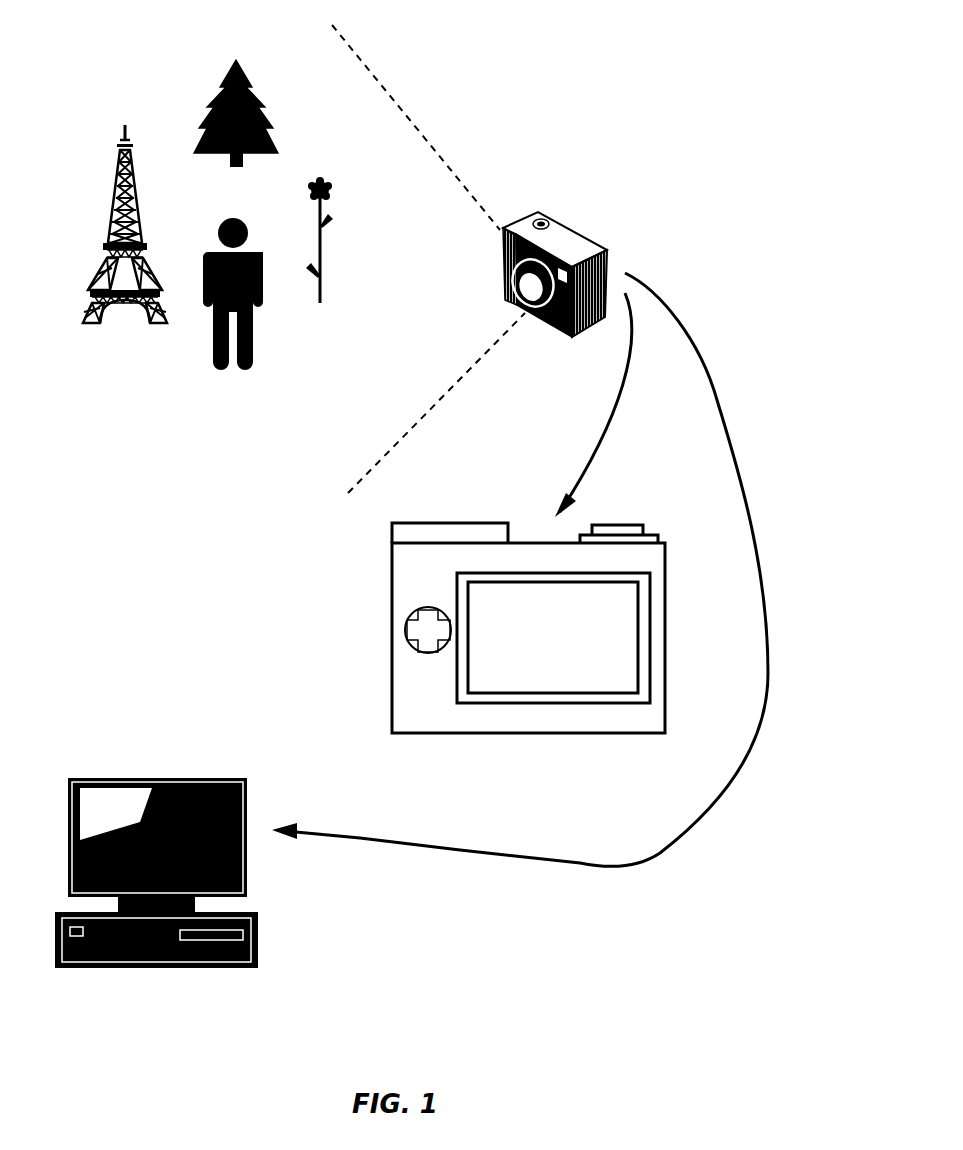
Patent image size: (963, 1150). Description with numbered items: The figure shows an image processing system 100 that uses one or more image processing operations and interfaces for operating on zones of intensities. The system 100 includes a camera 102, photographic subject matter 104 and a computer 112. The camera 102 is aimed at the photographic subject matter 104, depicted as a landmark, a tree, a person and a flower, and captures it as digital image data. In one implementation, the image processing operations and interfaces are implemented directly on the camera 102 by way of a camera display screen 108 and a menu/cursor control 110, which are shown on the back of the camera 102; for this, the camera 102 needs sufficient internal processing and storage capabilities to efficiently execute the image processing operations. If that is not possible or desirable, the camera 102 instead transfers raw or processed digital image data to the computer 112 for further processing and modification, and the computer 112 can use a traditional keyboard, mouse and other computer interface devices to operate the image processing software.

The image processing system 100 is at (550, 45).
The camera 102 is at (577, 238).
The photographic subject matter 104 is at (127, 55).
The camera display screen 108 is at (553, 703).
The menu/cursor control 110 is at (408, 627).
The computer 112 is at (158, 777).